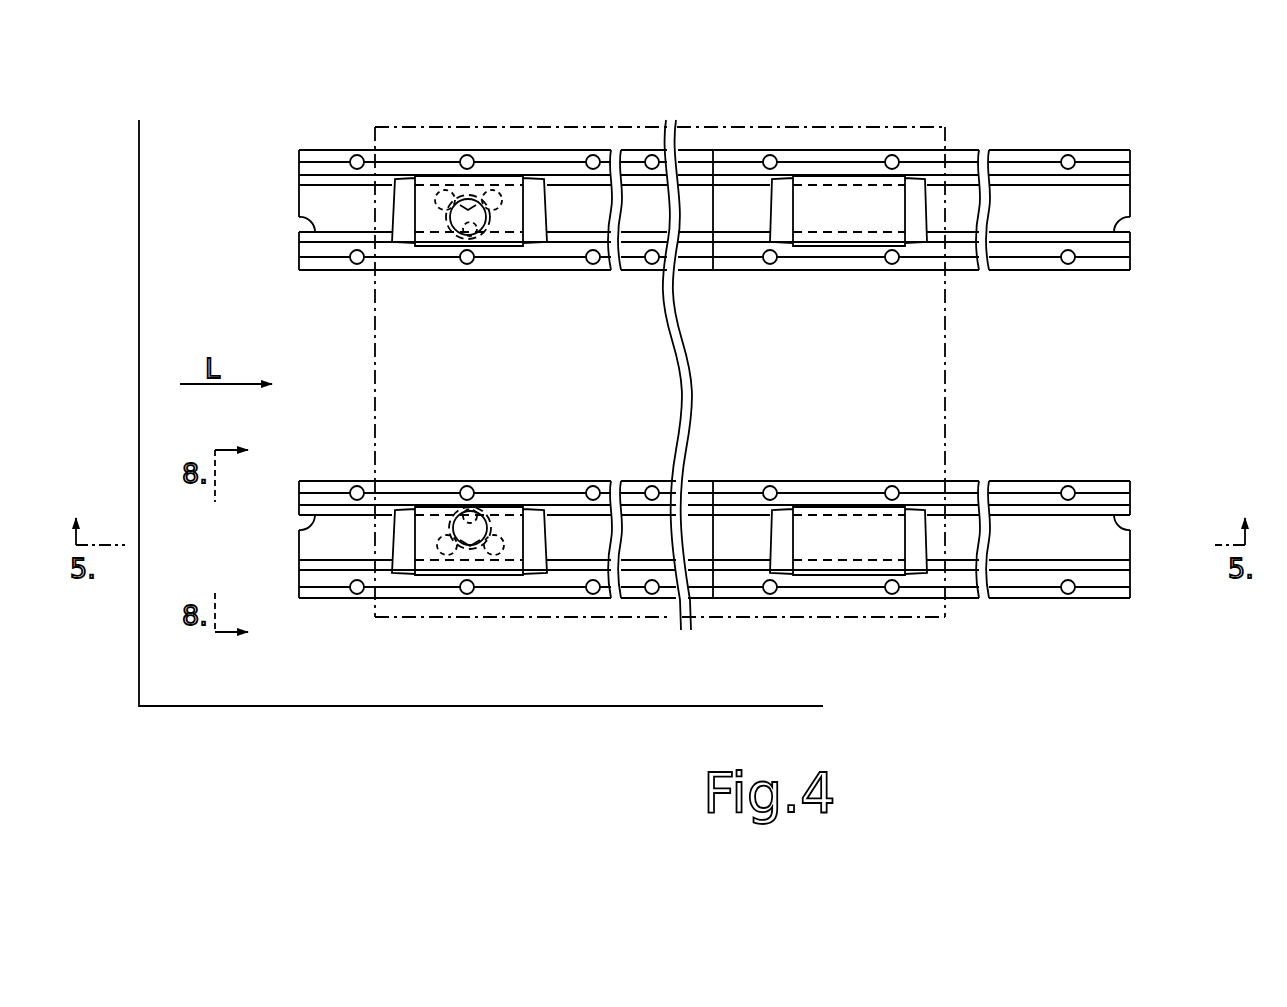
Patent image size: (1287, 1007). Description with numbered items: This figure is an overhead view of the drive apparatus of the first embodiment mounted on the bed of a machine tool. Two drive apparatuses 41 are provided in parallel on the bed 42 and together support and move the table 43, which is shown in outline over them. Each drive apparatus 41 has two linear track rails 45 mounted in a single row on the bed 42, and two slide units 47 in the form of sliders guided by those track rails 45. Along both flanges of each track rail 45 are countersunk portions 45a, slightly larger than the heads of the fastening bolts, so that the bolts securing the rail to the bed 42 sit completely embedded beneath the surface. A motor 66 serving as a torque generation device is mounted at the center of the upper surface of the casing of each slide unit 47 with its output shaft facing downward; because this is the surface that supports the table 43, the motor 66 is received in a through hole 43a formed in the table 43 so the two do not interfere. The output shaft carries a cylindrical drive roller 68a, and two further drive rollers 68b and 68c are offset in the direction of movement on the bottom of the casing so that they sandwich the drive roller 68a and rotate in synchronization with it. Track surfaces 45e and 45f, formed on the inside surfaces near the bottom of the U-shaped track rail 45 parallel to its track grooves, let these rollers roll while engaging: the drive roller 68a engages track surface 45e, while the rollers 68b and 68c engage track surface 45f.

The drive apparatus 41 is at (734, 369).
The bed 42 is at (228, 686).
The table 43 is at (845, 128).
The through hole 43a is at (482, 238).
The track rail 45 is at (306, 272).
The countersunk portion 45a is at (357, 158).
The track surface 45e is at (303, 238).
The track surface 45f is at (322, 187).
The slide unit 47 is at (445, 247).
The motor 66 is at (474, 204).
The drive roller 68a is at (474, 222).
The drive roller 68b is at (440, 190).
The drive roller 68c is at (502, 200).